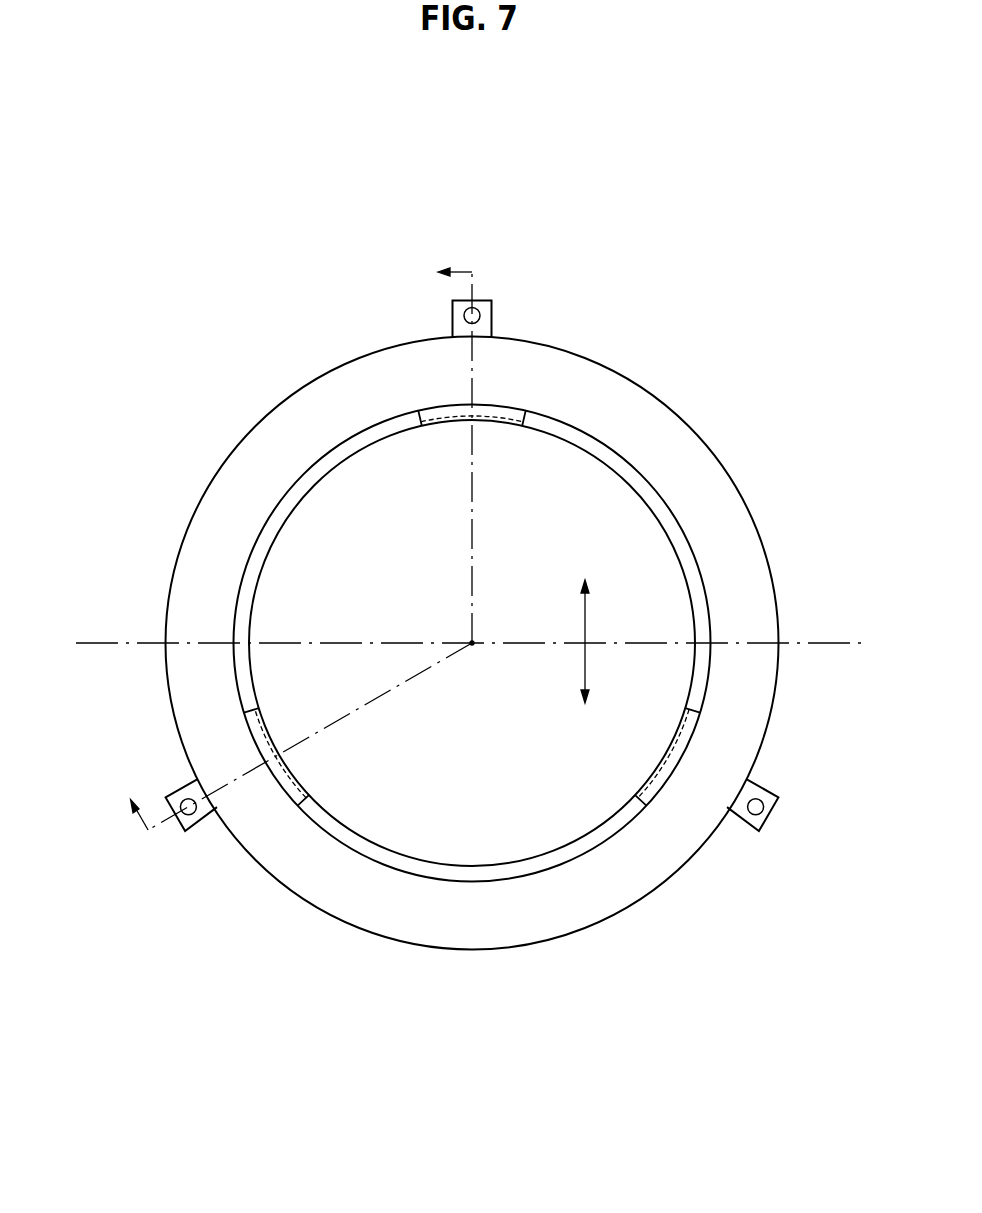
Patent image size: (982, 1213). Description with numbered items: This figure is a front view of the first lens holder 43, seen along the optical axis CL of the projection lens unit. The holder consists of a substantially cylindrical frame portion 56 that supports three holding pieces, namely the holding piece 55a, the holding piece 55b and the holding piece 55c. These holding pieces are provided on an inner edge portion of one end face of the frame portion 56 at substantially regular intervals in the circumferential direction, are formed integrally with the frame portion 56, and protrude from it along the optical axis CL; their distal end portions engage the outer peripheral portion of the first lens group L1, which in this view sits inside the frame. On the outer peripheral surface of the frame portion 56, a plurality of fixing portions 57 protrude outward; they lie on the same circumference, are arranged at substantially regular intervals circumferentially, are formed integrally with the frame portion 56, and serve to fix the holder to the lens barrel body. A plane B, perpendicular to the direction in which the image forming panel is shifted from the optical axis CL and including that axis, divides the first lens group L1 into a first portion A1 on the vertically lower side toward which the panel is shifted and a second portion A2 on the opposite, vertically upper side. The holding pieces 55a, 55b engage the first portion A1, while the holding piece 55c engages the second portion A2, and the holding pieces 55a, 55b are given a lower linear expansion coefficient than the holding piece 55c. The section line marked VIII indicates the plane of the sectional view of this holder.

The first lens holder 43 is at (273, 360).
The frame portion 56 is at (662, 397).
The fixing portions 57 is at (452, 316).
The holding piece 55a is at (293, 797).
The holding piece 55b is at (655, 797).
The holding piece 55c is at (508, 406).
The first lens group L1 is at (473, 845).
The optical axis CL is at (472, 643).
The plane B is at (98, 640).
The first portion A1 is at (583, 694).
The second portion A2 is at (583, 592).
The section line VIII is at (286, 534).